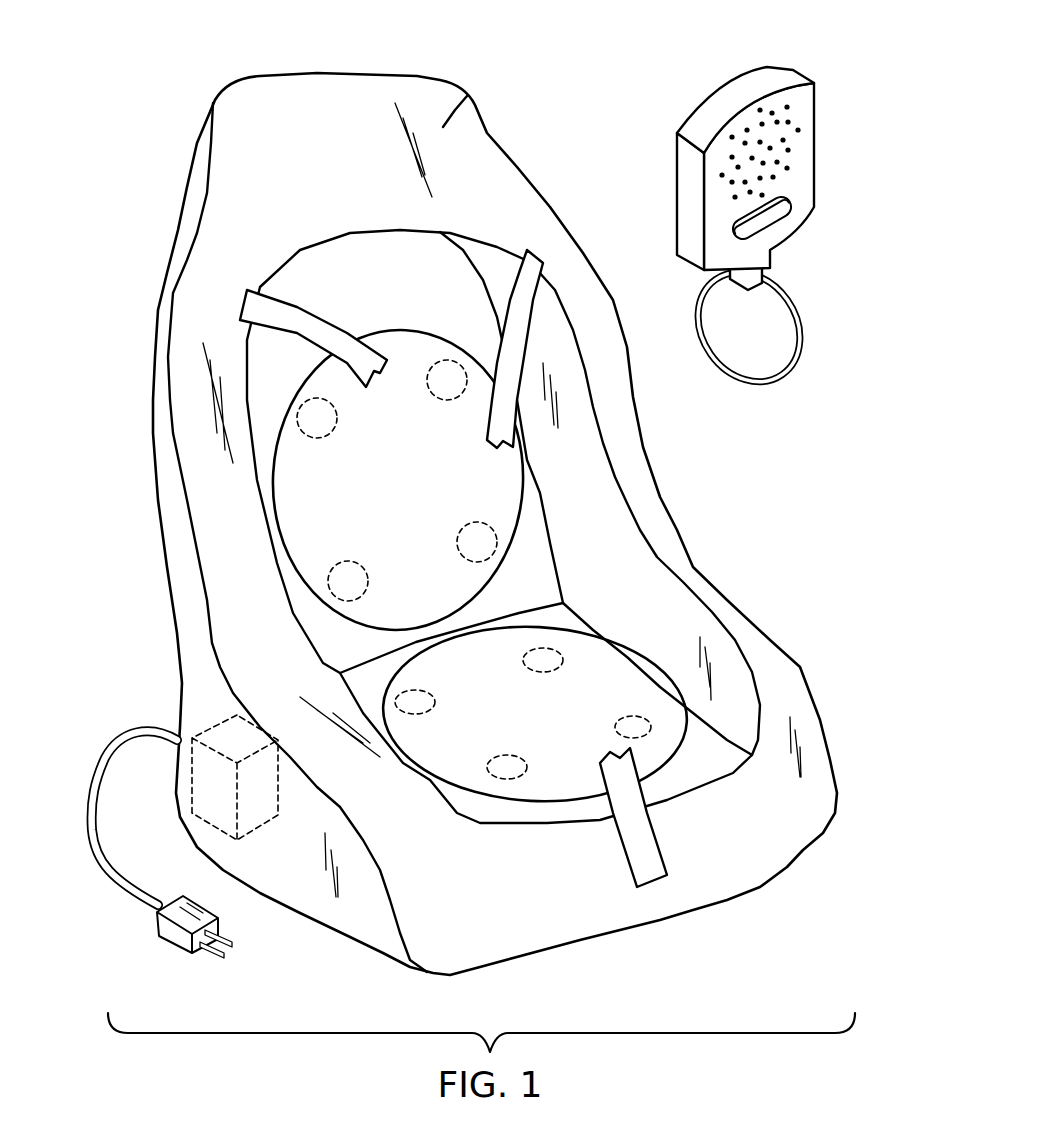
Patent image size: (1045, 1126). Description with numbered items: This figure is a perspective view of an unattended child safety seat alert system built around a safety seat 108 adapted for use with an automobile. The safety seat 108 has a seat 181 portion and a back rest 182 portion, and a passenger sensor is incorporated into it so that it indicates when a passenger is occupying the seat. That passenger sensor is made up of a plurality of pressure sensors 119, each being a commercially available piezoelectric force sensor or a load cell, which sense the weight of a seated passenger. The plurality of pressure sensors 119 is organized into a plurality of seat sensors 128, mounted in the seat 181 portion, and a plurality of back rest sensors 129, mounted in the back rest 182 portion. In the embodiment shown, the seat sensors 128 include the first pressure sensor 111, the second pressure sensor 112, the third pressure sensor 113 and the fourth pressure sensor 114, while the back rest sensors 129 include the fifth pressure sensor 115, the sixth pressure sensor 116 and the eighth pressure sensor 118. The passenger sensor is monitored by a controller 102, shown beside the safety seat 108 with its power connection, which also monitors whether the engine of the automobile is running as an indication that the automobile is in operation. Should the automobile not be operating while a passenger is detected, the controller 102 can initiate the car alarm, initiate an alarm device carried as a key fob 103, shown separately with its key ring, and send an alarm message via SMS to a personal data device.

The controller 102 is at (210, 782).
The key fob 103 is at (795, 232).
The safety seat 108 is at (462, 96).
The first pressure sensor 111 is at (429, 707).
The second pressure sensor 112 is at (437, 398).
The third pressure sensor 113 is at (559, 660).
The fourth pressure sensor 114 is at (622, 717).
The fifth pressure sensor 115 is at (320, 438).
The sixth pressure sensor 116 is at (360, 566).
The eighth pressure sensor 118 is at (478, 523).
The plurality of pressure sensors 119 is at (655, 653).
The plurality of seat sensors 128 is at (517, 803).
The plurality of back rest sensors 129 is at (423, 330).
The seat 181 is at (383, 277).
The back rest 182 is at (710, 747).